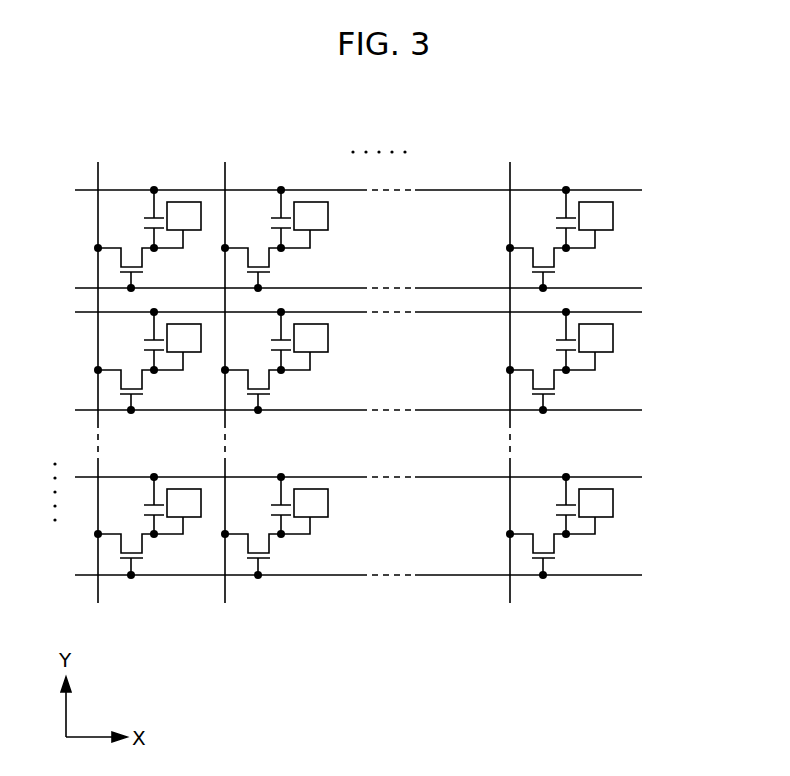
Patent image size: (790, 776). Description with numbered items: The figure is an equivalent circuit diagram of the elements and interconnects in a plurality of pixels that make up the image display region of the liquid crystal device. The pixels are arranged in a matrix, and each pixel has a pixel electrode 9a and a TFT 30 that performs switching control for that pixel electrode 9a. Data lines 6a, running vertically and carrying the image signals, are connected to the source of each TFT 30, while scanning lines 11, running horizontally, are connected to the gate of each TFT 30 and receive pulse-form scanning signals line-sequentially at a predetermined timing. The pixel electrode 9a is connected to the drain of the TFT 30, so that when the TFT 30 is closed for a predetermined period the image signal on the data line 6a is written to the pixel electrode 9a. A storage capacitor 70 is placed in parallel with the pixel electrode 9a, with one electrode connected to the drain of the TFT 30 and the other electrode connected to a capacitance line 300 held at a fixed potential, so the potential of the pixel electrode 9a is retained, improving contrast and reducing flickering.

The data line 6a is at (98, 173).
The storage capacitor 70 is at (142, 225).
The TFT 30 is at (113, 260).
The capacitance line 300 is at (628, 190).
The pixel electrode 9a is at (609, 220).
The scanning line 11 is at (635, 290).